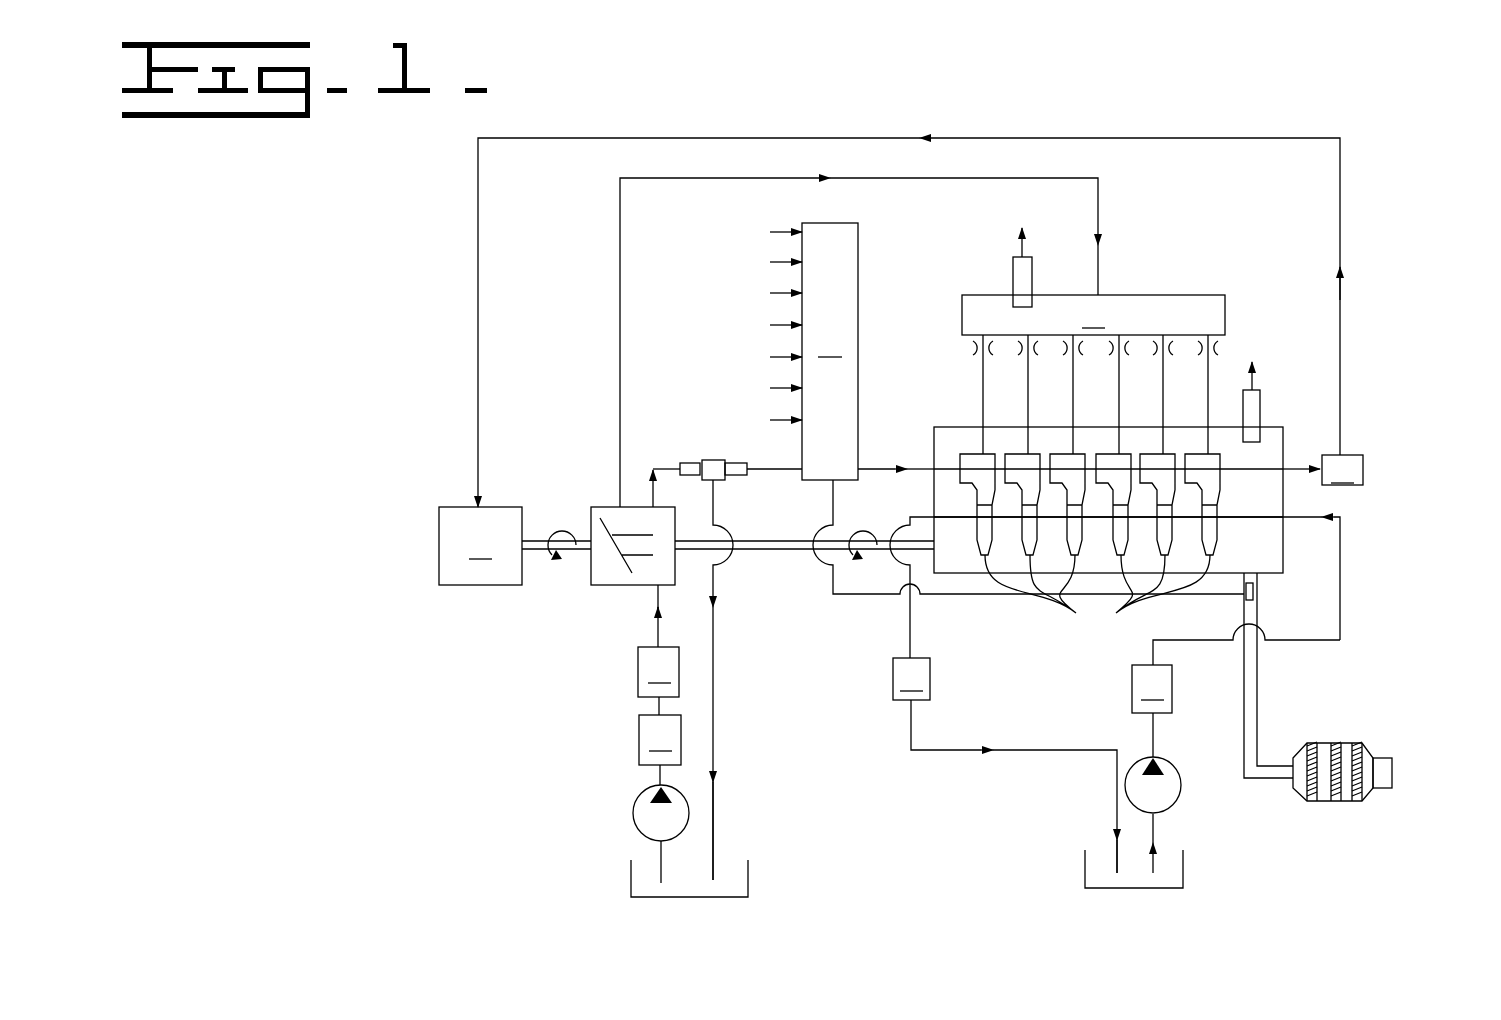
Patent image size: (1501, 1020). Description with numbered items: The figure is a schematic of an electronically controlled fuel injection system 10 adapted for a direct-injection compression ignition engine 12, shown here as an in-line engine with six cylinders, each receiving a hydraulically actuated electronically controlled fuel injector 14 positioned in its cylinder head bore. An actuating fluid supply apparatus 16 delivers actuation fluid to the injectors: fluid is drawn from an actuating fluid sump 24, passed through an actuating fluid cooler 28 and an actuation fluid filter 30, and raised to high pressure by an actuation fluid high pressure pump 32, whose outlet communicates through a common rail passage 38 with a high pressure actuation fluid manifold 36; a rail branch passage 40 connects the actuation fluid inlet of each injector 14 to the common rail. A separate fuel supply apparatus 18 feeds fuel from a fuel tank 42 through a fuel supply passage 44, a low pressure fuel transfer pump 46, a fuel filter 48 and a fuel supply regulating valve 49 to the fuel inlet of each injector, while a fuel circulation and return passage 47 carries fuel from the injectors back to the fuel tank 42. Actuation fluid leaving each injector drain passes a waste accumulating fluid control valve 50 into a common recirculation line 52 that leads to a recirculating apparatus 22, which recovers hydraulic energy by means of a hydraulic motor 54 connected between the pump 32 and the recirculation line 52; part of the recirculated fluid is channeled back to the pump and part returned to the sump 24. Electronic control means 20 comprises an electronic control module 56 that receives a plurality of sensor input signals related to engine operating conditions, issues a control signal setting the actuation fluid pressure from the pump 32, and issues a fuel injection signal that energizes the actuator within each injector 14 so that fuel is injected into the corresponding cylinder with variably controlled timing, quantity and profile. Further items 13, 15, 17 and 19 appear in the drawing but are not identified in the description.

The fuel injection system 10 is at (635, 128).
The engine 12 is at (940, 425).
The exhaust pipe 13 is at (1257, 665).
The fuel injector 14 is at (1090, 540).
The catalytic converter 15 is at (1345, 735).
The actuating fluid supply apparatus 16 is at (625, 886).
The exhaust gas sensor 17 is at (1257, 590).
The fuel supply apparatus 18 is at (1195, 878).
The exhaust outlet 19 is at (1400, 775).
The electronic control means 20 is at (858, 258).
The actuation fluid recirculating apparatus 22 is at (497, 285).
The actuating fluid sump 24 is at (748, 865).
The actuating fluid cooler 28 is at (660, 741).
The actuation fluid filter 30 is at (658, 641).
The actuation fluid high pressure pump 32 is at (610, 585).
The high pressure actuation fluid manifold 36 is at (1093, 269).
The common rail passage 38 is at (1100, 295).
The rail branch passage 40 is at (980, 367).
The fuel tank 42 is at (1085, 858).
The fuel supply passage 44 is at (1150, 640).
The fuel transfer pump 46 is at (1183, 780).
The fuel circulation and return passage 47 is at (1085, 752).
The fuel filter 48 is at (1152, 689).
The fuel supply regulating valve 49 is at (1115, 608).
The waste accumulating fluid control valve 50 is at (1302, 408).
The common recirculation line 52 is at (720, 138).
The hydraulic motor 54 is at (480, 546).
The electronic control module 56 is at (932, 529).